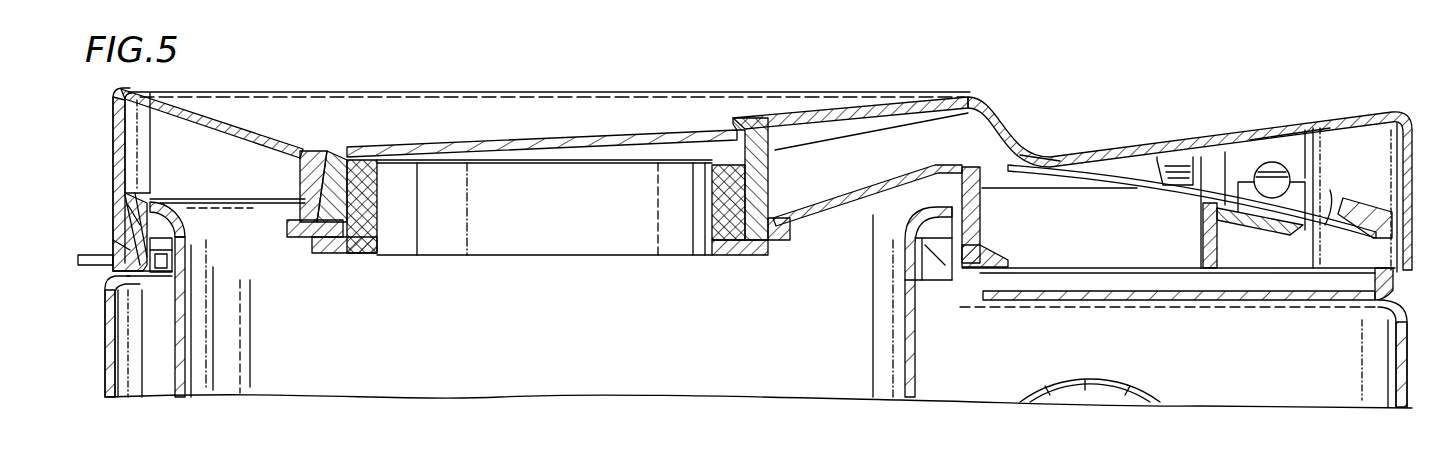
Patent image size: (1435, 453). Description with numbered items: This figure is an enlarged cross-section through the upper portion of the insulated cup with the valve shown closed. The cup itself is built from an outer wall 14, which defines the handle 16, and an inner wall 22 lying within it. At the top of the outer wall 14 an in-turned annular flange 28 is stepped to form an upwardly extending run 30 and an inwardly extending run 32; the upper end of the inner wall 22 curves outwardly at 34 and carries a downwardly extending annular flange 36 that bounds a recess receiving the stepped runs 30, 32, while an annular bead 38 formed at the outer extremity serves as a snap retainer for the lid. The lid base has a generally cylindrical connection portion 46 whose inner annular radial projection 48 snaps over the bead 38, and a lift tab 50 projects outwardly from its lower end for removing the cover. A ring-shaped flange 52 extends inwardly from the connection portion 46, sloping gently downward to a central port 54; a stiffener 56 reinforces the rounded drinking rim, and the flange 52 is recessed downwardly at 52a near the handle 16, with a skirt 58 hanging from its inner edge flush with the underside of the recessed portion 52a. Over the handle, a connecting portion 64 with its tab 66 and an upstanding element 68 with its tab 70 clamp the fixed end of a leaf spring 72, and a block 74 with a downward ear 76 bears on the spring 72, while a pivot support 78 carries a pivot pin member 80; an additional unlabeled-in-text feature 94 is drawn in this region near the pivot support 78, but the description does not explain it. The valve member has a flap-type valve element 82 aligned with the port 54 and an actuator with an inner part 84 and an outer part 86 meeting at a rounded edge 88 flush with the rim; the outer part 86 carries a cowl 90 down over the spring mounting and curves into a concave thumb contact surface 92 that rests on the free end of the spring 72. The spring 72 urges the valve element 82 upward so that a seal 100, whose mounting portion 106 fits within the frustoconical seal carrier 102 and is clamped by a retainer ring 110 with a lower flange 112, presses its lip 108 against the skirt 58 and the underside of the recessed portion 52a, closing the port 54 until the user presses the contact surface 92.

The outer wall 14 is at (108, 367).
The handle 16 is at (1398, 380).
The inner wall 22 is at (913, 362).
The in-turned annular flange 28 is at (150, 275).
The upwardly extending run 30 is at (183, 292).
The inwardly extending run 32 is at (185, 247).
The outwardly curved upper end 34 is at (193, 207).
The annular flange 36 is at (125, 218).
The annular bead 38 is at (140, 187).
The connection portion 46 is at (982, 220).
The annular radial projection 48 is at (128, 220).
The lift tab 50 is at (95, 265).
The ring-shaped flange 52 is at (247, 133).
The recessed portion 52a is at (875, 205).
The central port 54 is at (353, 150).
The stiffener 56 is at (170, 90).
The skirt 58 is at (302, 175).
The connecting portion 64 is at (1392, 290).
The tab 66 is at (1372, 210).
The upstanding element 68 is at (1218, 252).
The tab 70 is at (1297, 233).
The leaf spring 72 is at (1326, 213).
The block 74 is at (1133, 255).
The ear 76 is at (1183, 163).
The pivot support 78 is at (1243, 183).
The pivot pin member 80 is at (1270, 162).
The valve element 82 is at (483, 147).
The inner part of valve extension 84 is at (850, 113).
The outer part of valve extension 86 is at (1337, 120).
The rounded edge 88 is at (972, 95).
The cowl 90 is at (1400, 120).
The contact surface 92 is at (1040, 153).
The button guide 94 is at (1293, 153).
The seal 100 is at (748, 260).
The seal carrier 102 is at (760, 198).
The mounting portion 106 is at (733, 195).
The lip 108 is at (788, 253).
The retainer ring 110 is at (370, 192).
The flange 112 is at (360, 257).